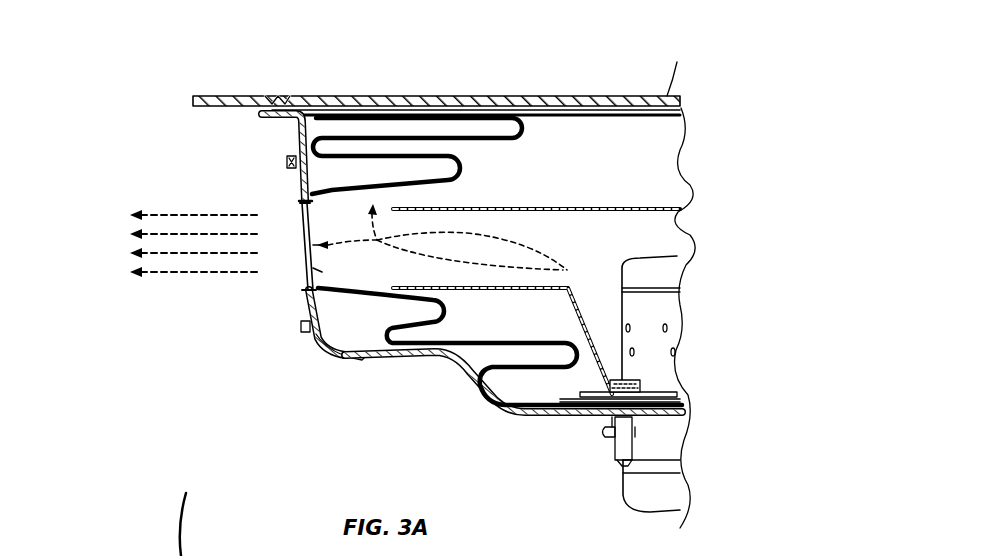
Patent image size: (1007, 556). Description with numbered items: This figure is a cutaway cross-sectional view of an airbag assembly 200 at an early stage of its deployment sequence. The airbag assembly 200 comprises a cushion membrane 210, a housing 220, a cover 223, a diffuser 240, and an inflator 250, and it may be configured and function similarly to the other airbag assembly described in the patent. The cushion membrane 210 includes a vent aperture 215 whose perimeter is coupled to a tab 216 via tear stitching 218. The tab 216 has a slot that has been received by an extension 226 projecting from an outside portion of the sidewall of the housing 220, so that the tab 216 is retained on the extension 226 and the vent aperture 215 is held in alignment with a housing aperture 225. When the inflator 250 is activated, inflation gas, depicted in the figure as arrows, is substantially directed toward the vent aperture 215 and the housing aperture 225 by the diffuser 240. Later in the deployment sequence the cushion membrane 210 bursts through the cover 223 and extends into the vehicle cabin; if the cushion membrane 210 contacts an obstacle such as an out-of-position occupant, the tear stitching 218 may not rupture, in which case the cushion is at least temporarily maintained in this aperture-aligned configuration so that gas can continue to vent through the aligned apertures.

The airbag assembly 200 is at (332, 50).
The cushion membrane 210 is at (488, 158).
The vent aperture 215 is at (303, 287).
The tab 216 is at (295, 135).
The tear stitching 218 is at (300, 168).
The housing 220 is at (480, 397).
The cover 223 is at (575, 95).
The housing aperture 225 is at (303, 205).
The extension 226 is at (288, 162).
The diffuser 240 is at (473, 290).
The inflator 250 is at (643, 338).